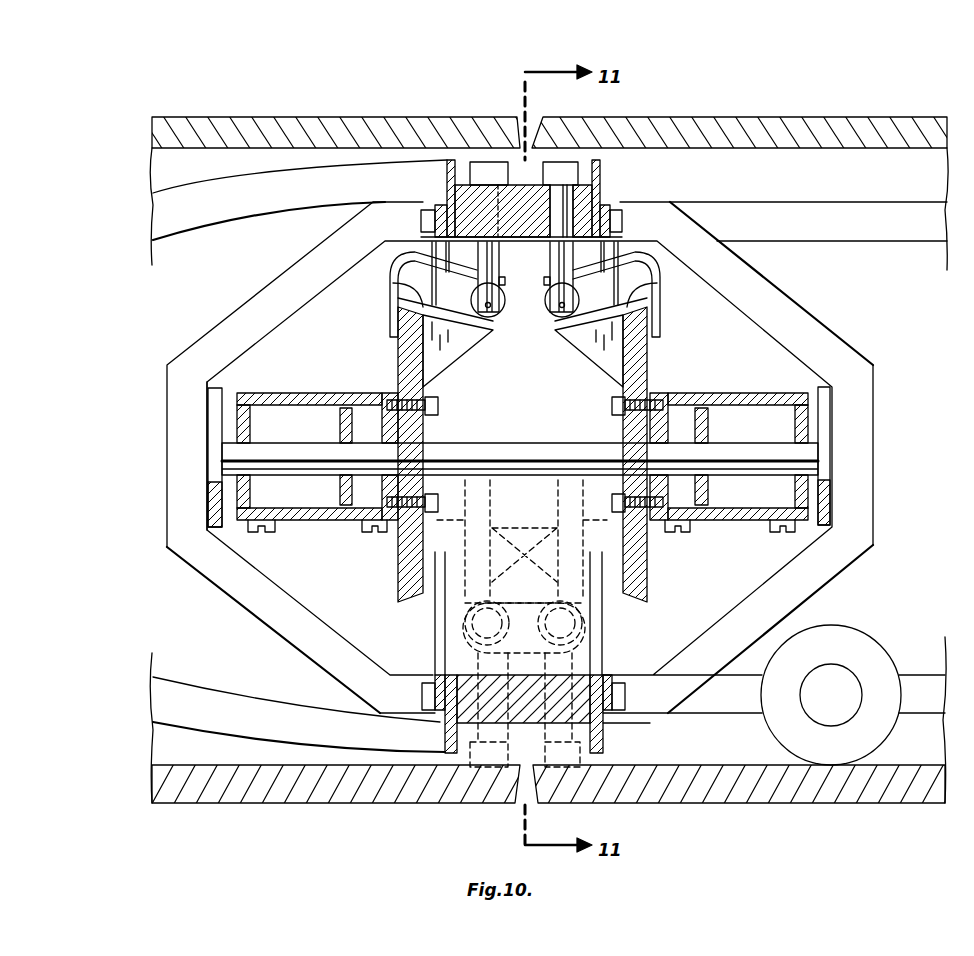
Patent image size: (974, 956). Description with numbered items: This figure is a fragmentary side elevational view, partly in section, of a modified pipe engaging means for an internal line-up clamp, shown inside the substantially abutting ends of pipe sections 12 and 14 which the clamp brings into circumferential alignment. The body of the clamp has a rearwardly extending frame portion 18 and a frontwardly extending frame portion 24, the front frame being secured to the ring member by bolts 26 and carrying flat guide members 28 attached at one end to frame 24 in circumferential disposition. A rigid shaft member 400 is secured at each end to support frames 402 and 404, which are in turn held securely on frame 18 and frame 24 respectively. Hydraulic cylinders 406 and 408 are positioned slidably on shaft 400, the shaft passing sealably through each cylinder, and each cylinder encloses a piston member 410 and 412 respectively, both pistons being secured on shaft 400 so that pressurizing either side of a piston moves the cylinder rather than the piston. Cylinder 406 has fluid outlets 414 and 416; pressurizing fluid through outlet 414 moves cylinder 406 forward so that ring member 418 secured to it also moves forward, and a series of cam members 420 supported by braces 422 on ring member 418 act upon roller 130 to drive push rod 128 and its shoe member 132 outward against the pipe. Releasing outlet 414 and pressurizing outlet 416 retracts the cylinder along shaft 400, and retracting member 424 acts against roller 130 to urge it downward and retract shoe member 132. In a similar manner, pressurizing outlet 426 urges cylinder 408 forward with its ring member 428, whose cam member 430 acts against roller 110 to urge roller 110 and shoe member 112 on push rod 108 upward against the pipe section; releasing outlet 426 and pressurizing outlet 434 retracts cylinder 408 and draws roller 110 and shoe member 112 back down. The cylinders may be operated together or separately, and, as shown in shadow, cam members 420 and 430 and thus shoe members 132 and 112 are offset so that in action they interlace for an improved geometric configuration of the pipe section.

The pipe section 14 is at (318, 116).
The pipe section 12 is at (770, 117).
The guide members 28 is at (185, 190).
The bolts 26 is at (421, 218).
The frontwardly extending frame portion 24 is at (250, 326).
The rearwardly extending frame portion 18 is at (622, 202).
The push rod 108 is at (475, 210).
The shoe members 112 is at (492, 165).
The shoe members 132 is at (562, 168).
The push rods 128 is at (600, 190).
The bearing 130 is at (553, 323).
The bearing member 110 is at (500, 310).
The retracting member 424 is at (545, 279).
The cam member 430 is at (393, 283).
The cam members 420 is at (655, 286).
The fluid outlet 426 is at (375, 533).
The ring member 428 is at (405, 385).
The ring member 418 is at (645, 385).
The braces 422 is at (593, 358).
The rigid shaft member 400 is at (488, 443).
The support frame 404 is at (223, 393).
The support frame 402 is at (818, 390).
The hydraulic cylinder 408 is at (335, 393).
The hydraulic cylinder 406 is at (752, 393).
The piston member 412 is at (338, 420).
The piston member 410 is at (710, 424).
The fluid outlet 434 is at (258, 533).
The fluid outlet 414 is at (680, 533).
The fluid outlet 416 is at (785, 533).